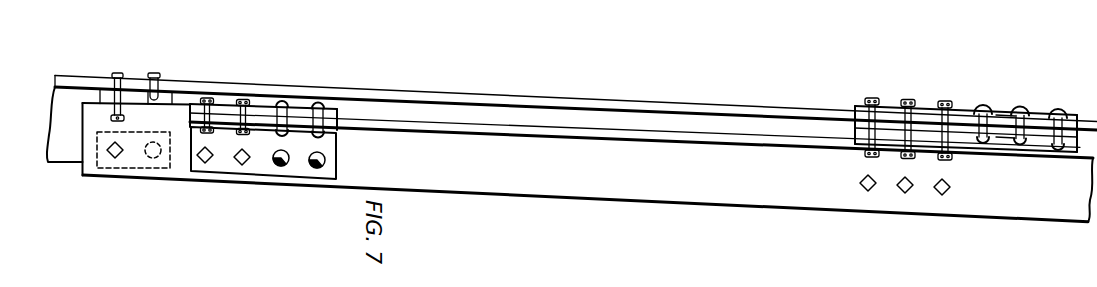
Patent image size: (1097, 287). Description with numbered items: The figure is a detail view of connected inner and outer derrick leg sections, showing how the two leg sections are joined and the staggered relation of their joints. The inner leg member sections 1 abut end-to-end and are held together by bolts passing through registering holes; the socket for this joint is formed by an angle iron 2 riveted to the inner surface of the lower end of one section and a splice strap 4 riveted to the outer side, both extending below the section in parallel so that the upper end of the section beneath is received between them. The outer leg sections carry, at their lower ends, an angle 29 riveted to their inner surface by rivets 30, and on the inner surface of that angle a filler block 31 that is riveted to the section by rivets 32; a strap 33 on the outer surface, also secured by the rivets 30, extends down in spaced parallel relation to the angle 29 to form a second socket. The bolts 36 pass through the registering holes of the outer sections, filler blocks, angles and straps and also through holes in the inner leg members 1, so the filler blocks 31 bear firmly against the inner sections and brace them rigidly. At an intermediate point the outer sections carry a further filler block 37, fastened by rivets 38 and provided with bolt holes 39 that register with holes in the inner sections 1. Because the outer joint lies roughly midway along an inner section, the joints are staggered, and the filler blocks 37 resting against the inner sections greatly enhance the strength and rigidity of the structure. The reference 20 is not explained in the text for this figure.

The leg member section 1 is at (628, 188).
The angle iron 2 is at (300, 160).
The splice strap 4 is at (303, 110).
The rail 20 is at (604, 100).
The angle 29 is at (1041, 106).
The rivet 30 is at (1060, 108).
The filler block 31 is at (962, 140).
The rivet 32 is at (983, 104).
The strap 33 is at (1003, 108).
The bolt 36 is at (208, 133).
The filler block 37 is at (164, 100).
The rivet 38 is at (153, 73).
The bolt hole 39 is at (117, 73).